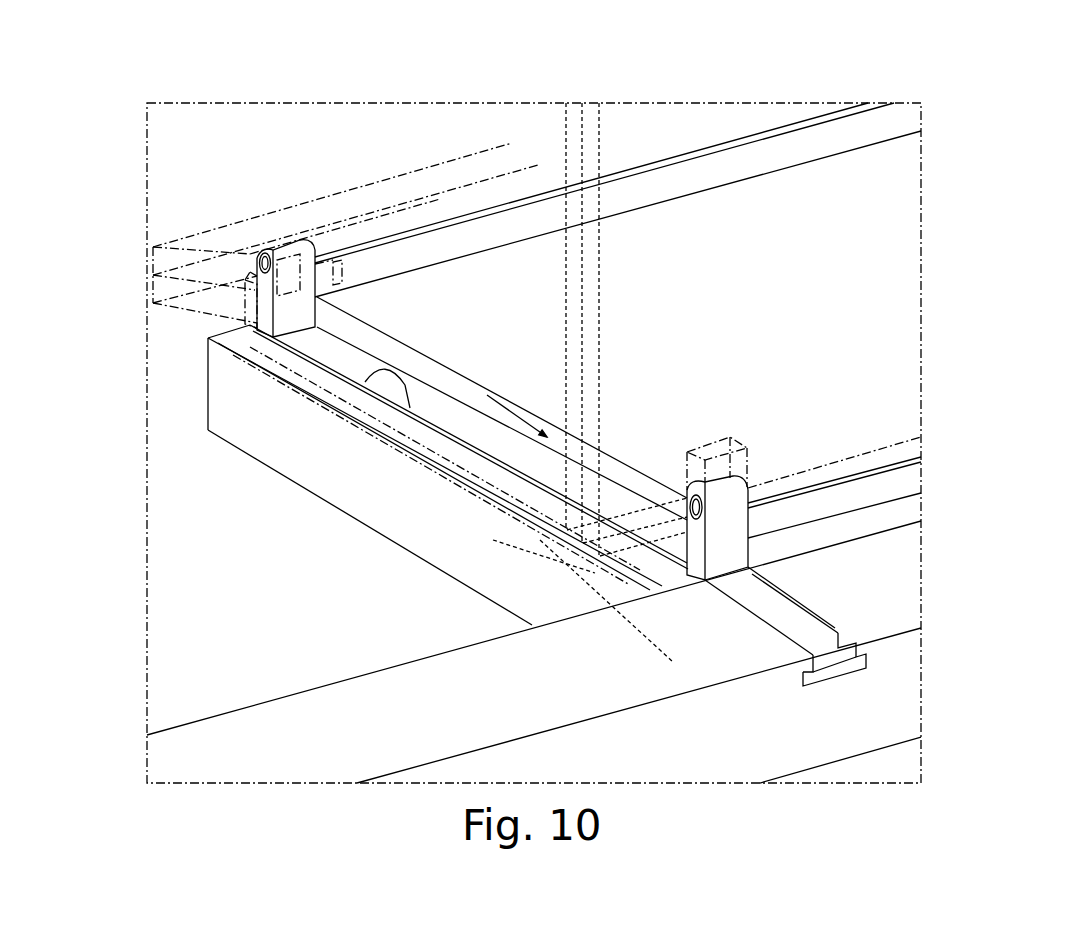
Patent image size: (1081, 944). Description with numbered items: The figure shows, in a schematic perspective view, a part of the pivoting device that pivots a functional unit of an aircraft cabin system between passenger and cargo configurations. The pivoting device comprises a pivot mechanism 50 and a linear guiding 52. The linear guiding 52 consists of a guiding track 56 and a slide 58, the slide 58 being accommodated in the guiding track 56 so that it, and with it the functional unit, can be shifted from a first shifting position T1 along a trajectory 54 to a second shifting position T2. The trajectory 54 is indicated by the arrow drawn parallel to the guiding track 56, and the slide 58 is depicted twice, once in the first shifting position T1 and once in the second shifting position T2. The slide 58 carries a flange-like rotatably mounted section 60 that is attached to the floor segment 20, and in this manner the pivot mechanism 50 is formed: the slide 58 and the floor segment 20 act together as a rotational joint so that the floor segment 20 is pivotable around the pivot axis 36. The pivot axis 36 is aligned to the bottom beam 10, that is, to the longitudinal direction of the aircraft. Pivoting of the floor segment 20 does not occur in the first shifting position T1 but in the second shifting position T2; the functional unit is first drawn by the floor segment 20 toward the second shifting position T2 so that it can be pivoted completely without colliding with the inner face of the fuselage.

The bottom beam 10 is at (928, 548).
The floor segment 20 is at (398, 165).
The pivot axis 36 is at (245, 242).
The pivot mechanism 50 is at (288, 218).
The linear guiding 52 is at (322, 522).
The trajectory 54 is at (489, 395).
The guiding track 56 is at (310, 472).
The slide 58 is at (370, 378).
The flange-like rotatably mounted section 60 is at (265, 302).
The first shifting position T1 is at (396, 312).
The second shifting position T2 is at (796, 446).